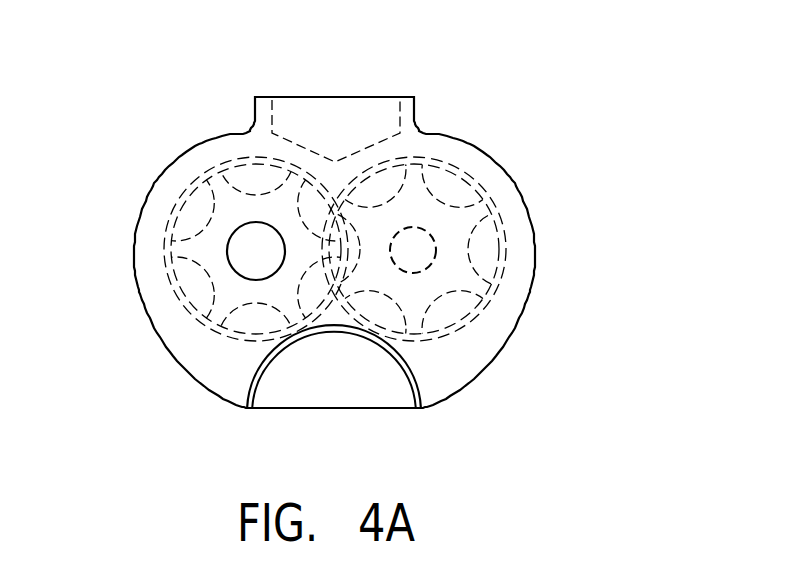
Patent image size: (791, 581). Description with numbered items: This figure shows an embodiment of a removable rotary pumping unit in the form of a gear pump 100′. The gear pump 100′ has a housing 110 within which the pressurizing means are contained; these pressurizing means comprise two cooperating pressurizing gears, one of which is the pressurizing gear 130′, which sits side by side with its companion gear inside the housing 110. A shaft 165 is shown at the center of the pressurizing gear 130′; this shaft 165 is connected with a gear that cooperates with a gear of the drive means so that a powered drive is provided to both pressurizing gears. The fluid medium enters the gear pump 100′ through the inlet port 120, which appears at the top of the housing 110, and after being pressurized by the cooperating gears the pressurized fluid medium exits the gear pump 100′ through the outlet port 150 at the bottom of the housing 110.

The gear pump 100′ is at (478, 105).
The housing 110 is at (510, 172).
The inlet port 120 is at (345, 113).
The pressurizing gear 130′ is at (245, 191).
The outlet port 150 is at (307, 392).
The shaft 165 is at (250, 258).